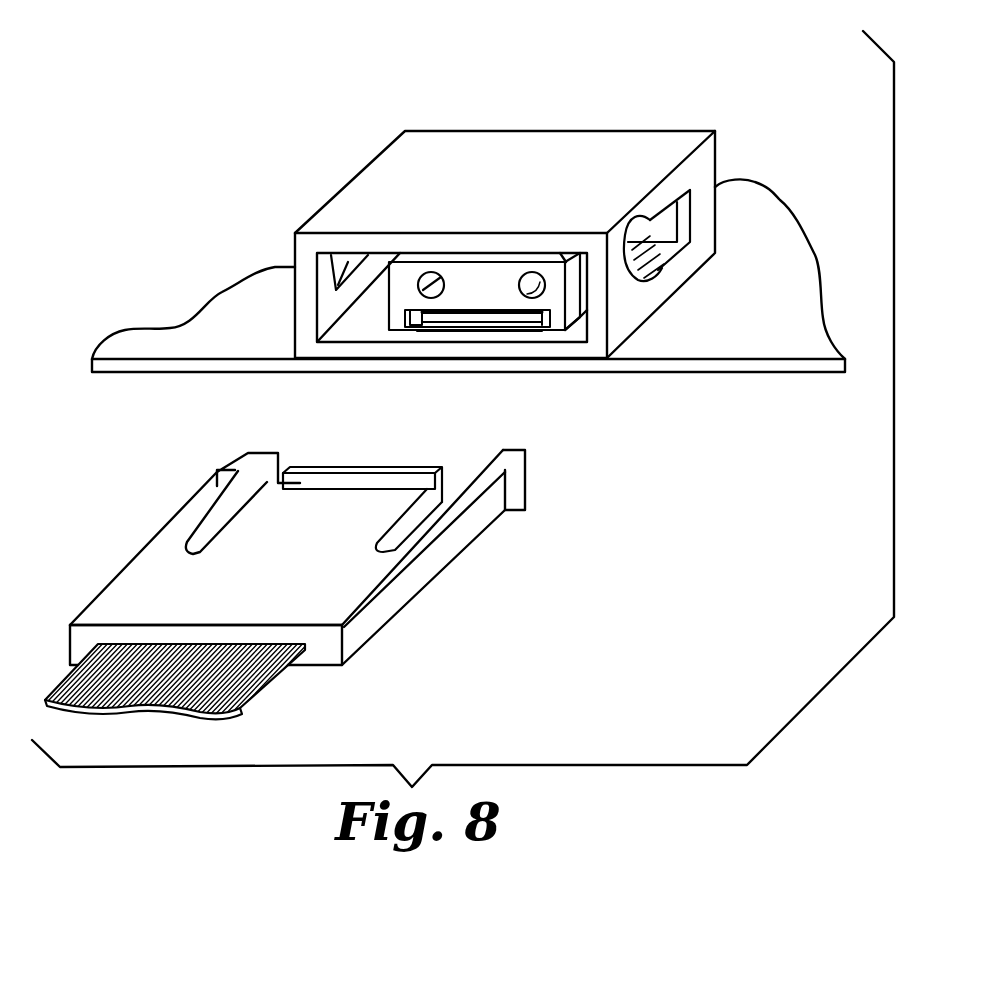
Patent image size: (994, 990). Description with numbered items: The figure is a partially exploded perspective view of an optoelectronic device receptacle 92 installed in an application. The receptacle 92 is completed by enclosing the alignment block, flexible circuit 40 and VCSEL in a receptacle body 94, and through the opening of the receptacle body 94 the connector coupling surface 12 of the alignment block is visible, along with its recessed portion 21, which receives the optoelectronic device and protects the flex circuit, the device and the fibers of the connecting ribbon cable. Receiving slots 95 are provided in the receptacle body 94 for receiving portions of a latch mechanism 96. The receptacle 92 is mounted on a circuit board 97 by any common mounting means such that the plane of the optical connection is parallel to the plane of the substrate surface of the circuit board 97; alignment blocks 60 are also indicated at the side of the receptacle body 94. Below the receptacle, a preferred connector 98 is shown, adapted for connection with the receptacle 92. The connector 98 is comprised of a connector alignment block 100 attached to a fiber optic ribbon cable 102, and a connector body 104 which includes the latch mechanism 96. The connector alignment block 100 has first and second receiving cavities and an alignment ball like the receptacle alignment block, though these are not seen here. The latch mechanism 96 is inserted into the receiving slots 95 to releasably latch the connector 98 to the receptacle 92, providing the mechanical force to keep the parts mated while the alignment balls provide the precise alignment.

The optoelectronic device receptacle 92 is at (619, 78).
The receptacle body 94 is at (458, 145).
The receiving slots 95 is at (344, 263).
The connector coupling surface 12 is at (477, 275).
The circuit board 97 is at (801, 285).
The alignment blocks 60 is at (646, 249).
The recessed portion 21 is at (404, 324).
The flexible circuit 40 is at (465, 332).
The connector alignment block 100 is at (344, 478).
The latch mechanism 96 is at (228, 474).
The connector body 104 is at (146, 573).
The connector 98 is at (477, 575).
The fiber optic ribbon cable 102 is at (262, 690).